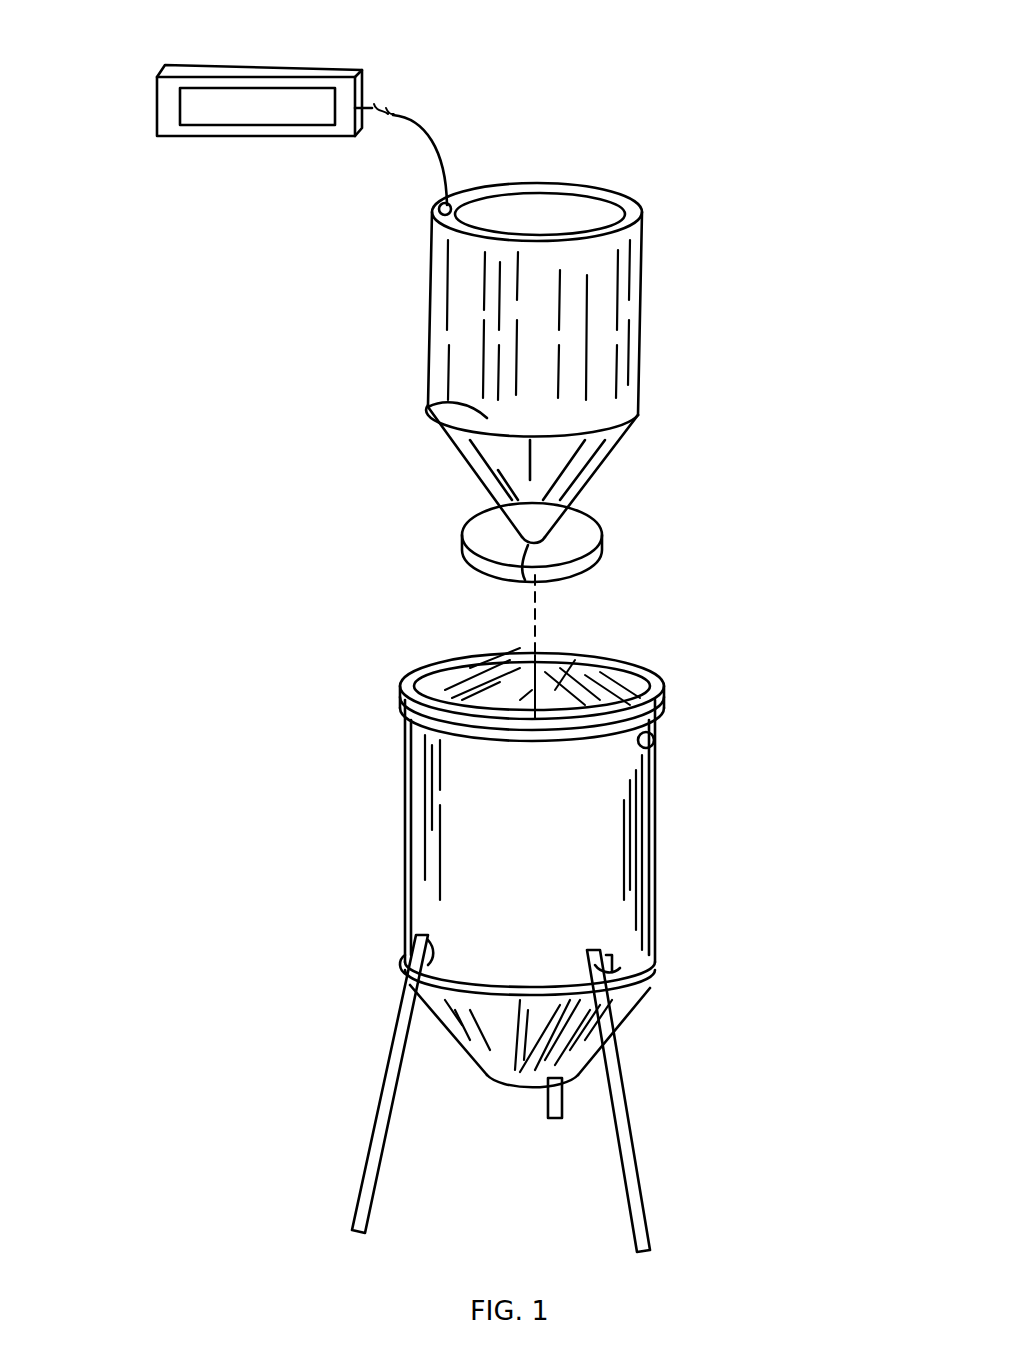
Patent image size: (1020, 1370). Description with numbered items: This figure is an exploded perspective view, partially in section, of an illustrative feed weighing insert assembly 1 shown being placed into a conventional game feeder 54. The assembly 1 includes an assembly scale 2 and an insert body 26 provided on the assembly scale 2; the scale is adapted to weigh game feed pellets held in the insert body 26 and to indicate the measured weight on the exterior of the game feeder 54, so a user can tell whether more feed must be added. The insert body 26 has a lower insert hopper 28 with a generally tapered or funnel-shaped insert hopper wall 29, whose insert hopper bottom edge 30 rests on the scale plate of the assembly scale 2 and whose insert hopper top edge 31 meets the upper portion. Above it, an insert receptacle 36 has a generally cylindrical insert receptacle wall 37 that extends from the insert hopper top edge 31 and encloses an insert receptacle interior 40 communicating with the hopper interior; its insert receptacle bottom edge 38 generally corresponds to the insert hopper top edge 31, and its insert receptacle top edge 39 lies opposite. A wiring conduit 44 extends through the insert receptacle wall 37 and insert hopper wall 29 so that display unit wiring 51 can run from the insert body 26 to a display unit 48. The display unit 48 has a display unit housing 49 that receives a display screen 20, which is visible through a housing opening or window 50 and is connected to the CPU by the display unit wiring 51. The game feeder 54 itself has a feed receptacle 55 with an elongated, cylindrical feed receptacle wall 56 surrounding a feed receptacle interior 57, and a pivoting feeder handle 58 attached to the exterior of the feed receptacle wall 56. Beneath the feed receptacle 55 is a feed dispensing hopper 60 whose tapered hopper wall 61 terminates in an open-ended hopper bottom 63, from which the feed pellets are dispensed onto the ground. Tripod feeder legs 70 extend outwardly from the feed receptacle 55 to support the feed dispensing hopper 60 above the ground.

The feed weighing insert assembly 1 is at (635, 5).
The assembly scale 2 is at (562, 561).
The display screen 20 is at (302, 110).
The insert body 26 is at (551, 327).
The insert hopper 28 is at (514, 467).
The insert hopper wall 29 is at (500, 445).
The insert hopper bottom edge 30 is at (528, 552).
The insert hopper top edge 31 is at (430, 404).
The insert receptacle 36 is at (534, 324).
The insert receptacle wall 37 is at (440, 290).
The insert receptacle bottom edge 38 is at (490, 484).
The insert receptacle top edge 39 is at (640, 205).
The insert receptacle interior 40 is at (534, 222).
The wiring conduit 44 is at (438, 208).
The display unit 48 is at (232, 66).
The display unit housing 49 is at (157, 90).
The housing opening or window 50 is at (186, 110).
The display unit wiring 51 is at (372, 112).
The game feeder 54 is at (582, 805).
The feed receptacle 55 is at (578, 847).
The feed receptacle wall 56 is at (590, 845).
The feed receptacle interior 57 is at (562, 688).
The pivoting feeder handle 58 is at (654, 738).
The feed dispensing hopper 60 is at (462, 1050).
The hopper wall 61 is at (630, 990).
The hopper bottom 63 is at (540, 1082).
The tripod feeder legs 70 is at (529, 1093).